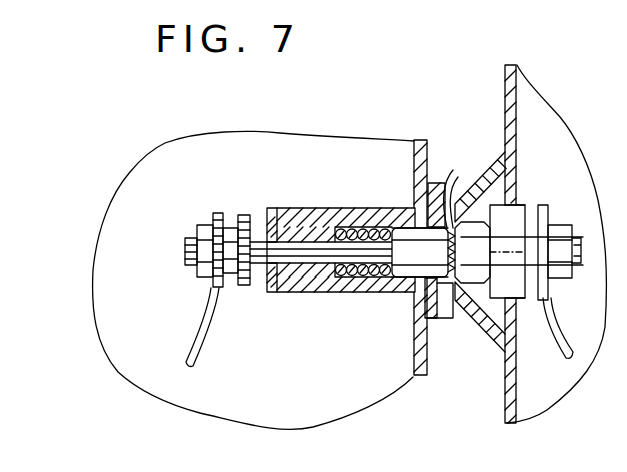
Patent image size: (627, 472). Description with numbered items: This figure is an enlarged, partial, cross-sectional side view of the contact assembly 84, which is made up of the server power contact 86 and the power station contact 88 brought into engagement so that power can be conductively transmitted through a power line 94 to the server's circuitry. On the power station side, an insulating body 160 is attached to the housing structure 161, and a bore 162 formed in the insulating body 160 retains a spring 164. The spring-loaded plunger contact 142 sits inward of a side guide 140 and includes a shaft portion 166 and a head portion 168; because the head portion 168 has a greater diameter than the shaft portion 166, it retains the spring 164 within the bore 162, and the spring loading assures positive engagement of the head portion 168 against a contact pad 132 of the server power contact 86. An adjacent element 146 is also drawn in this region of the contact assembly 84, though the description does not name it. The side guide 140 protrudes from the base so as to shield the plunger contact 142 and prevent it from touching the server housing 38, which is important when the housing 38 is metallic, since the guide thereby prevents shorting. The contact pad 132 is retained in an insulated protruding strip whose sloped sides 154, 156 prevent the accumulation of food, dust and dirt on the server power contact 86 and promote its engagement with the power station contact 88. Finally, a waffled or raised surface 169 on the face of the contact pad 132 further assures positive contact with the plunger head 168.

The server housing 38 is at (505, 88).
The contact assembly 84 is at (458, 387).
The server power contact 86 is at (490, 375).
The power station contact 88 is at (428, 350).
The power line 94 is at (562, 338).
The contact pad 132 is at (493, 192).
The side guide 140 is at (452, 205).
The plunger contact 142 is at (427, 262).
The flange 146 is at (427, 188).
The sloped side 154 is at (506, 158).
The sloped side 156 is at (482, 335).
The insulating body 160 is at (300, 209).
The housing structure 161 is at (190, 390).
The bore 162 is at (363, 228).
The spring 164 is at (340, 276).
The shaft portion 166 is at (302, 257).
The head portion 168 is at (403, 228).
The waffled or raised surface 169 is at (447, 230).